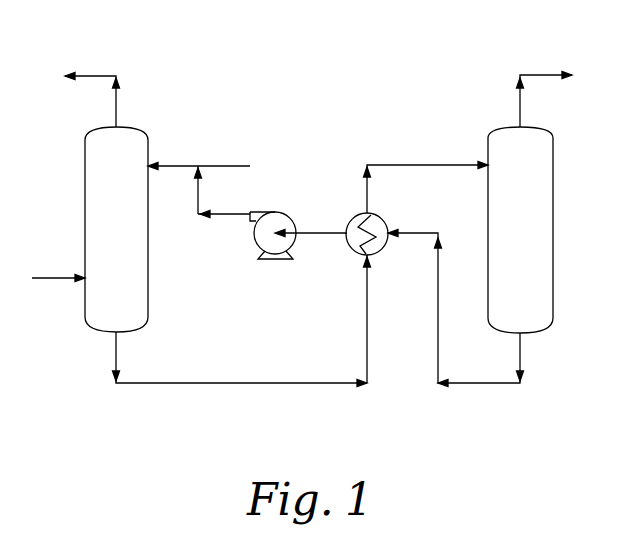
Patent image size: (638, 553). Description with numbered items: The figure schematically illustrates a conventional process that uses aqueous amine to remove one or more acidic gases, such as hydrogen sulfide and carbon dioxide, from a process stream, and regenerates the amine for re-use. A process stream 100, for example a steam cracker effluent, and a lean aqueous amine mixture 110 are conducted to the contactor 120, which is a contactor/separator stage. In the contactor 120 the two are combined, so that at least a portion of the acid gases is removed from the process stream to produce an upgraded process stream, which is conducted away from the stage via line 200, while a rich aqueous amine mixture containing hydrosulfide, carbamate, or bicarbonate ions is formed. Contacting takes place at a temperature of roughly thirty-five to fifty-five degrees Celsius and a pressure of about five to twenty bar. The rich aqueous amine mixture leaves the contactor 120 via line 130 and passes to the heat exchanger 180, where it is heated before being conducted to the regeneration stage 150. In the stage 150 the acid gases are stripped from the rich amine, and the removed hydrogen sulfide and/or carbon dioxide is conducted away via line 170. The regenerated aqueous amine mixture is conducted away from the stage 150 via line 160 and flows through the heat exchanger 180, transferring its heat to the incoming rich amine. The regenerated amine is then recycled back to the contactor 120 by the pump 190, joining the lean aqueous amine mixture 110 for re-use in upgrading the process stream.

The process stream 100 is at (50, 272).
The lean aqueous amine mixture 110 is at (225, 164).
The contactor 120 is at (84, 178).
The line 130 is at (112, 351).
The stage 150 is at (555, 200).
The line 160 is at (524, 353).
The line 170 is at (537, 72).
The heat exchanger 180 is at (386, 215).
The pump 190 is at (277, 210).
The line 200 is at (98, 73).